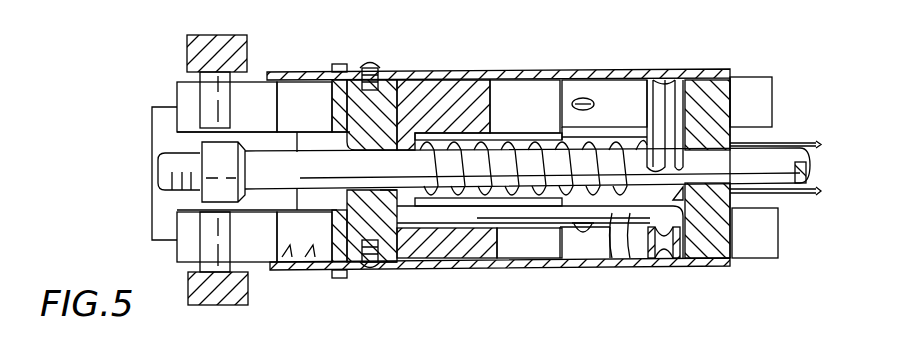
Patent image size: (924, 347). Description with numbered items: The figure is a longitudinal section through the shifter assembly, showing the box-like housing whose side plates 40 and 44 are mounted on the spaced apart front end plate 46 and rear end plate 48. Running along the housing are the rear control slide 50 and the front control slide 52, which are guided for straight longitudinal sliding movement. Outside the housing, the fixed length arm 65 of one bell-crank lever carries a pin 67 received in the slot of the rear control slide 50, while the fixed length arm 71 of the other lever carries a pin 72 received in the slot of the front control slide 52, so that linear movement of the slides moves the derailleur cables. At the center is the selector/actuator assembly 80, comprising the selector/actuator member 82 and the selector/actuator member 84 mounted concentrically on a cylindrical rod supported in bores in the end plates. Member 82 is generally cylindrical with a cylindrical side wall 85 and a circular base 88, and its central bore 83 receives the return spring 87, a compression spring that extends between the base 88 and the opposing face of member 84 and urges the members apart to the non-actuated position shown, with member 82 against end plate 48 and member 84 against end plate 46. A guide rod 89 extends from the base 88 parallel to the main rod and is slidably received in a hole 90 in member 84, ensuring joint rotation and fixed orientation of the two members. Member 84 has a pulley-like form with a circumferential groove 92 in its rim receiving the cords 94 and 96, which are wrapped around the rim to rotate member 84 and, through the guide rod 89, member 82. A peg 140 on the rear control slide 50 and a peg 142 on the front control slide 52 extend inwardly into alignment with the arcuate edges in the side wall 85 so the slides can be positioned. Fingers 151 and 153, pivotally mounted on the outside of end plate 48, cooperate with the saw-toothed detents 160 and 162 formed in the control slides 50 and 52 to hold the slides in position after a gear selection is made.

The side plate 40 is at (510, 71).
The side plate 44 is at (453, 266).
The front end plate 46 is at (727, 90).
The rear end plate 48 is at (391, 81).
The rear control slide 50 is at (766, 266).
The front control slide 52 is at (786, 99).
The fixed length arm 65 is at (247, 287).
The pin 67 is at (213, 248).
The fixed length arm 71 is at (190, 52).
The pin 72 is at (206, 101).
The selector/actuator assembly 80 is at (548, 276).
The selector/actuator member 82 is at (430, 99).
The central bore 83 is at (490, 133).
The selector/actuator member 84 is at (650, 78).
The cylindrical side wall 85 is at (508, 259).
The return spring 87 is at (534, 139).
The circular base 88 is at (393, 268).
The guide rod 89 is at (611, 232).
The hole 90 is at (628, 236).
The groove 92 is at (670, 78).
The cord 94 is at (799, 146).
The cord 96 is at (803, 196).
The peg 140 is at (582, 244).
The peg 142 is at (588, 97).
The finger 151 is at (343, 279).
The finger 153 is at (345, 63).
The saw-toothed detents 160 is at (292, 268).
The saw-toothed detents 162 is at (298, 93).